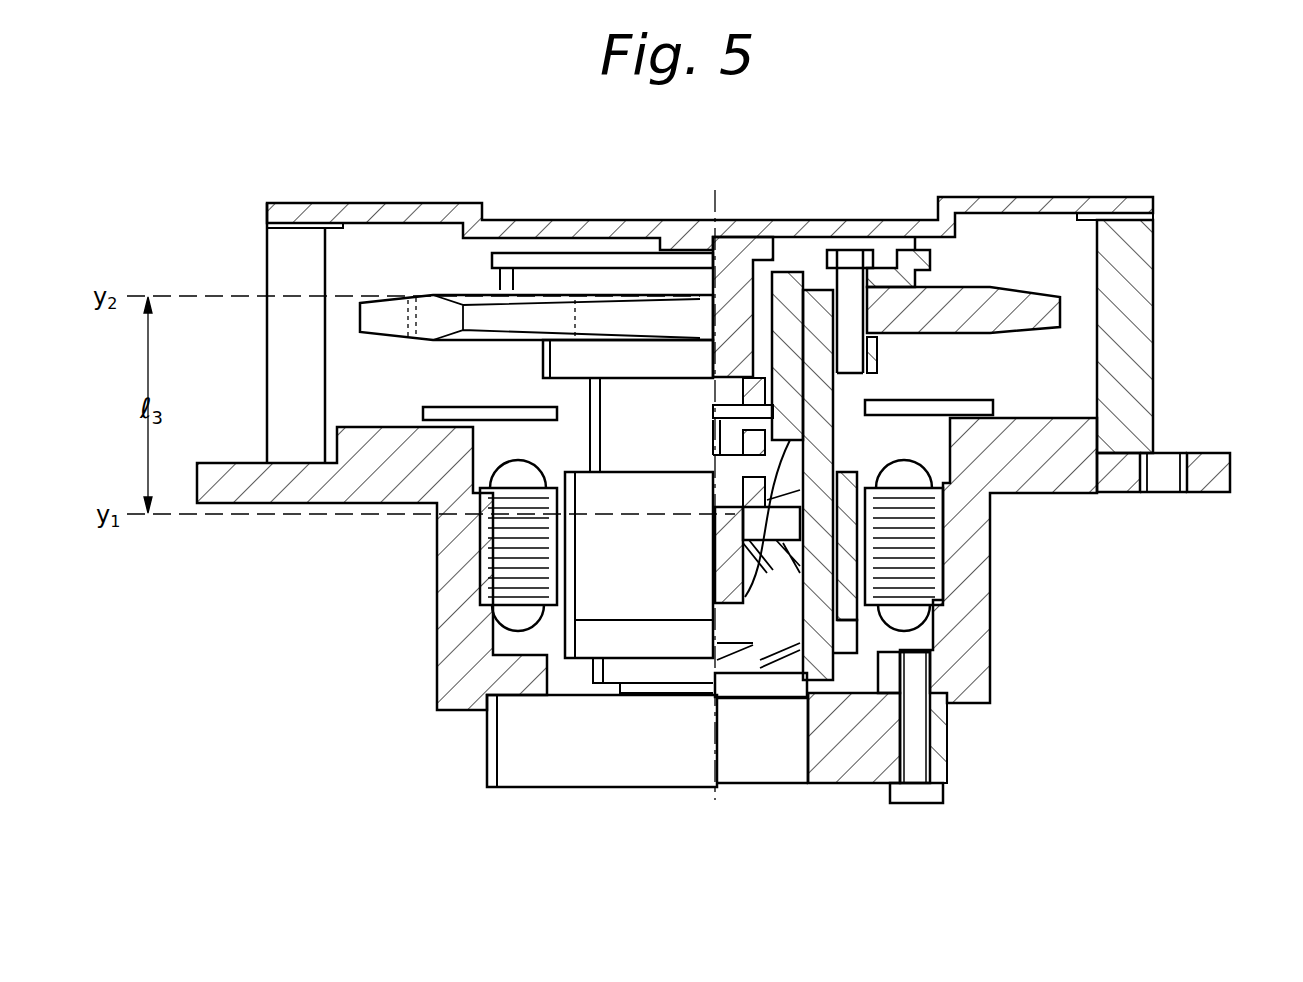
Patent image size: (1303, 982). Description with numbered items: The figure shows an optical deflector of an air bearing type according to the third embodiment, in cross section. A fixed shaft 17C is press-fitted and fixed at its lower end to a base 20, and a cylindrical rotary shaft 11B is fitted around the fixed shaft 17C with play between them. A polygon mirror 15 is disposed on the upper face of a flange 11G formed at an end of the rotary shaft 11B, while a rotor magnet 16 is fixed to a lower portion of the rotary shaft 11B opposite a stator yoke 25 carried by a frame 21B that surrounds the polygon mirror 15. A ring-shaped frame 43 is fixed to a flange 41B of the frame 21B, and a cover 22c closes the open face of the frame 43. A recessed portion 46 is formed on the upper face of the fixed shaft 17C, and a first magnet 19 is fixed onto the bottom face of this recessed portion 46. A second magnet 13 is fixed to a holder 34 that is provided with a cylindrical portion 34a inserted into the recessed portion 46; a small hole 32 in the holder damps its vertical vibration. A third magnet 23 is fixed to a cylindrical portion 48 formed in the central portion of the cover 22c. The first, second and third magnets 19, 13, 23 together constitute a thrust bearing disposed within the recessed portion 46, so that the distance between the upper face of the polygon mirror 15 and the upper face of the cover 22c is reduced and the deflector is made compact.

The cover 22c is at (445, 212).
The cylindrical portion 48 is at (760, 251).
The holder 34 is at (901, 263).
The polygon mirror 15 is at (1025, 304).
The frame 43 is at (1139, 296).
The flange 41B is at (1215, 460).
The frame 21B is at (966, 561).
The stator yoke 25 is at (918, 519).
The first magnet 19 is at (745, 490).
The third magnet 23 is at (743, 397).
The small hole 32 is at (715, 424).
The second magnet 13 is at (743, 445).
The cylindrical portion 34a is at (835, 416).
The recessed portion 46 is at (838, 391).
The flange 11G is at (878, 355).
The rotor magnet 16 is at (852, 598).
The rotary shaft 11B is at (840, 665).
The base 20 is at (645, 765).
The fixed shaft 17C is at (772, 627).